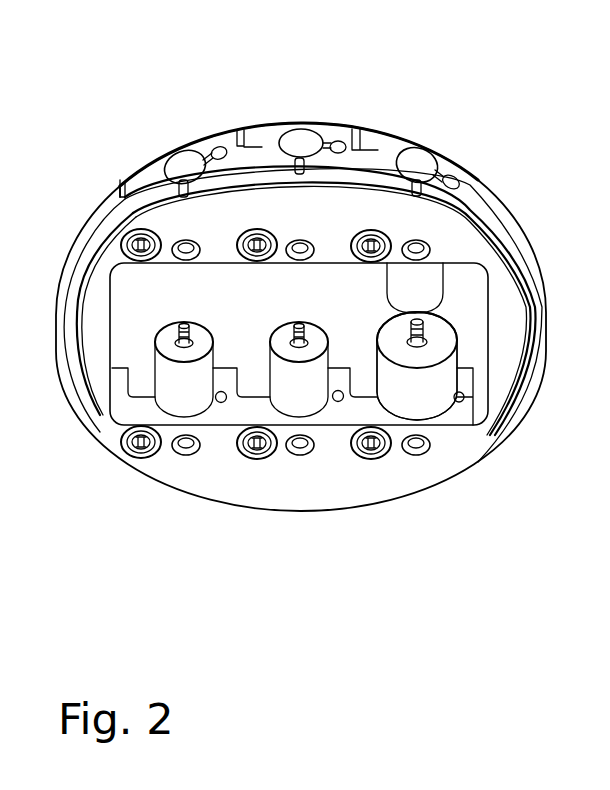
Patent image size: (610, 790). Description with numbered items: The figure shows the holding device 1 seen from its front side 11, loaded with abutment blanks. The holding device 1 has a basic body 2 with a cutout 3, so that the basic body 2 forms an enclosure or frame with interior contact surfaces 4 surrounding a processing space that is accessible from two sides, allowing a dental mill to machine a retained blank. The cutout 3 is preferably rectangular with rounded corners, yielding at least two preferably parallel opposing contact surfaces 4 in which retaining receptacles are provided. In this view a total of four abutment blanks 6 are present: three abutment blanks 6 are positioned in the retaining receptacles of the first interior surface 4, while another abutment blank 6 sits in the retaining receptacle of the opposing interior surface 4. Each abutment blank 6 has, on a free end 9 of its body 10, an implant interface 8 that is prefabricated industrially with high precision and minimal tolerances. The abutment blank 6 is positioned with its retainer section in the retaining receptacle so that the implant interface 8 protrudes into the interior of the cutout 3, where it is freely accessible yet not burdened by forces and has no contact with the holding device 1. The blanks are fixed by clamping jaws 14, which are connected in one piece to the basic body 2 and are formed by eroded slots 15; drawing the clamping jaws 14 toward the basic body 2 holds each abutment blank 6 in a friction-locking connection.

The holding device 1 is at (116, 130).
The basic body 2 is at (95, 295).
The cutout 3 is at (473, 283).
The interior contact surfaces 4 is at (331, 414).
The abutment blank 6 is at (403, 292).
The implant interface 8 is at (193, 336).
The free end 9 is at (445, 337).
The body 10 is at (449, 367).
The front side 11 is at (95, 385).
The clamping jaws 14 is at (143, 387).
The eroded slots 15 is at (240, 385).